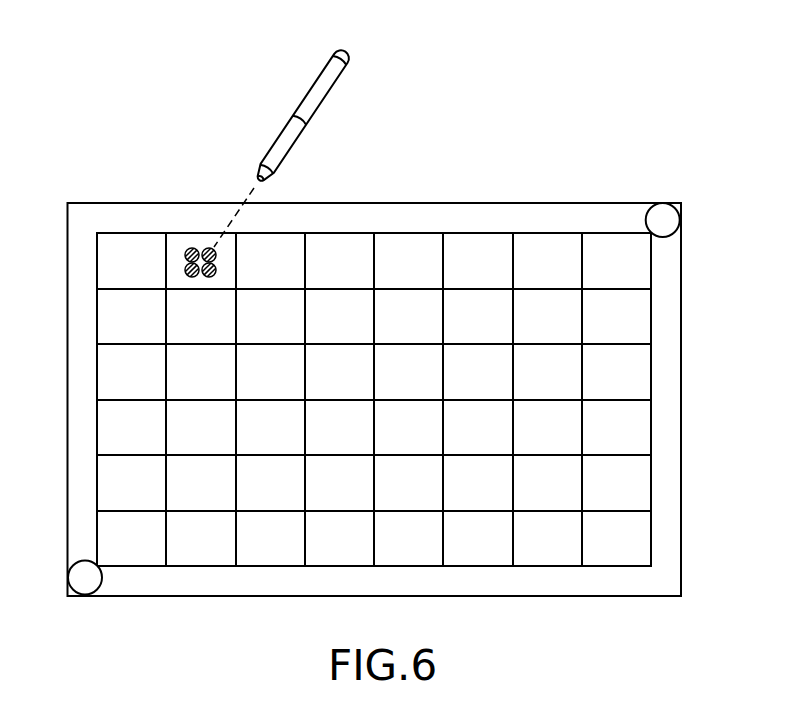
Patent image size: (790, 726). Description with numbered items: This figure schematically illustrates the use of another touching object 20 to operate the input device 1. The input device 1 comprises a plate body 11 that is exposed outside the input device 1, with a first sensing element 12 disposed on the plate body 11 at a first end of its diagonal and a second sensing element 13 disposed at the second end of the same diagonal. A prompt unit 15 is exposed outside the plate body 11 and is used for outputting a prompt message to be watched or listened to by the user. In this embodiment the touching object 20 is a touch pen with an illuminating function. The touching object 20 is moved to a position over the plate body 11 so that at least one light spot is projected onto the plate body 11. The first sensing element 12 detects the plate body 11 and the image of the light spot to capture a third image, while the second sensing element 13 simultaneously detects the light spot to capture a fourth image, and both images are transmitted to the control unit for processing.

The input device 1 is at (143, 140).
The plate body 11 is at (475, 249).
The first sensing element 12 is at (81, 580).
The second sensing element 13 is at (665, 218).
The prompt unit 15 is at (342, 233).
The touching object 20 is at (316, 96).